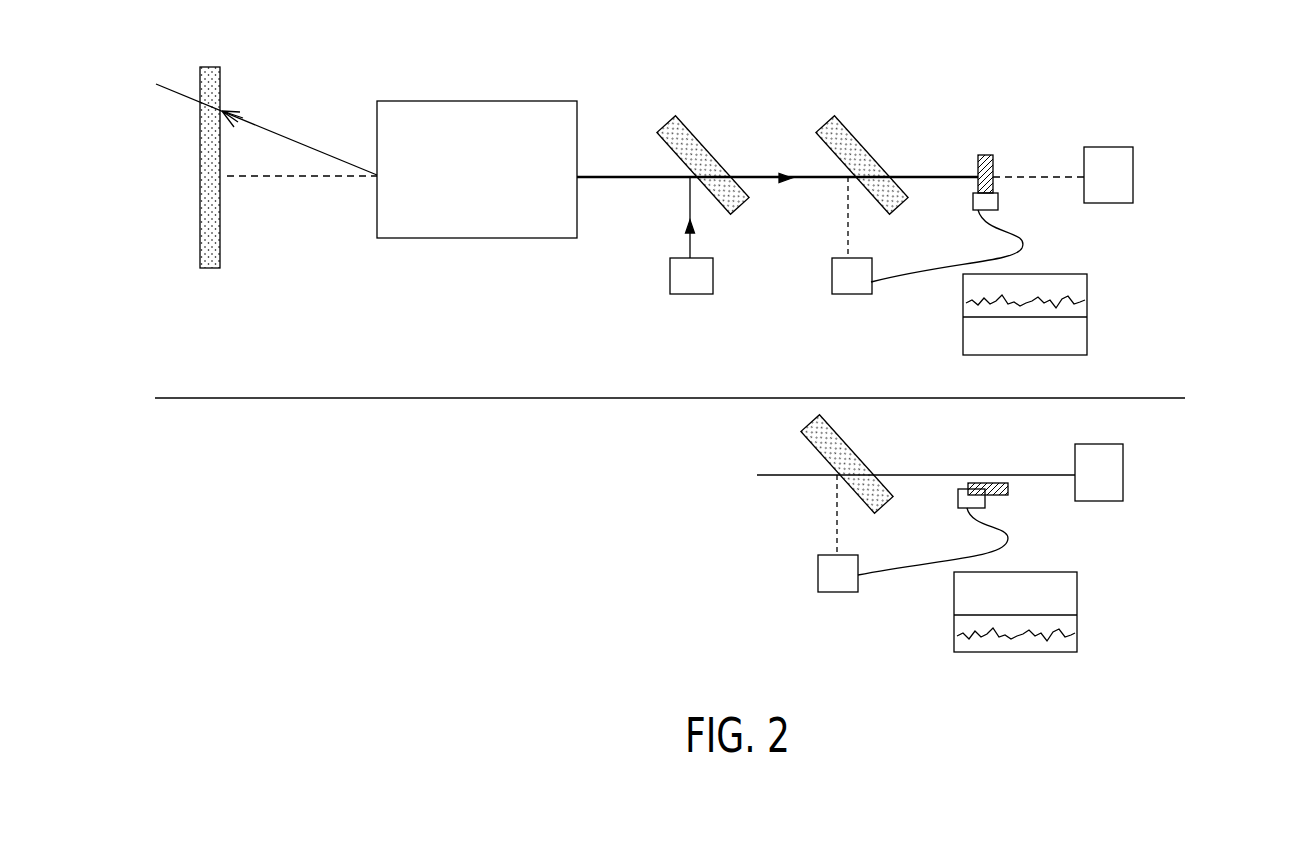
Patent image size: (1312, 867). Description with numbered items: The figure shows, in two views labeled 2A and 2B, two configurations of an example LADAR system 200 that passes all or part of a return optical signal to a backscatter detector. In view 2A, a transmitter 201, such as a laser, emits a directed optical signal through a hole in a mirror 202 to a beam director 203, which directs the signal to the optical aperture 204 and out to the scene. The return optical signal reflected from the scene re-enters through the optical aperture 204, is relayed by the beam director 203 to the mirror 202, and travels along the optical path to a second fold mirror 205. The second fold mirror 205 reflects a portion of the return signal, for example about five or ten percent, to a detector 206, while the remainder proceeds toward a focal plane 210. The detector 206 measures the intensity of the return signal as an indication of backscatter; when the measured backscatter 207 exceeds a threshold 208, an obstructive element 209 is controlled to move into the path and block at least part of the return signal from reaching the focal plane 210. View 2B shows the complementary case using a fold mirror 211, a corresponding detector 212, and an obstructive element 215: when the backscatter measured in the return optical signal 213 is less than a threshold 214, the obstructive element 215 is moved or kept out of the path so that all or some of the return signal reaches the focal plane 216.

The LADAR system 200 is at (173, 624).
The transmitter 201 is at (683, 294).
The mirror 202 is at (690, 130).
The beam director 203 is at (480, 100).
The optical aperture 204 is at (200, 185).
The second fold mirror 205 is at (850, 130).
The detector 206 is at (845, 294).
The measured signal trace 207 is at (1093, 301).
The threshold 208 is at (1093, 321).
The obstructive element 209 is at (985, 155).
The focal plane 210 is at (1082, 166).
The fold mirror 211 is at (810, 440).
The detector 212 is at (818, 593).
The return optical signal 213 is at (1085, 639).
The threshold 214 is at (1085, 618).
The obstructive element 215 is at (1004, 505).
The focal plane 216 is at (1070, 468).
The first configuration of the LADAR system 2A is at (1231, 126).
The second configuration of the LADAR system 2B is at (1231, 497).